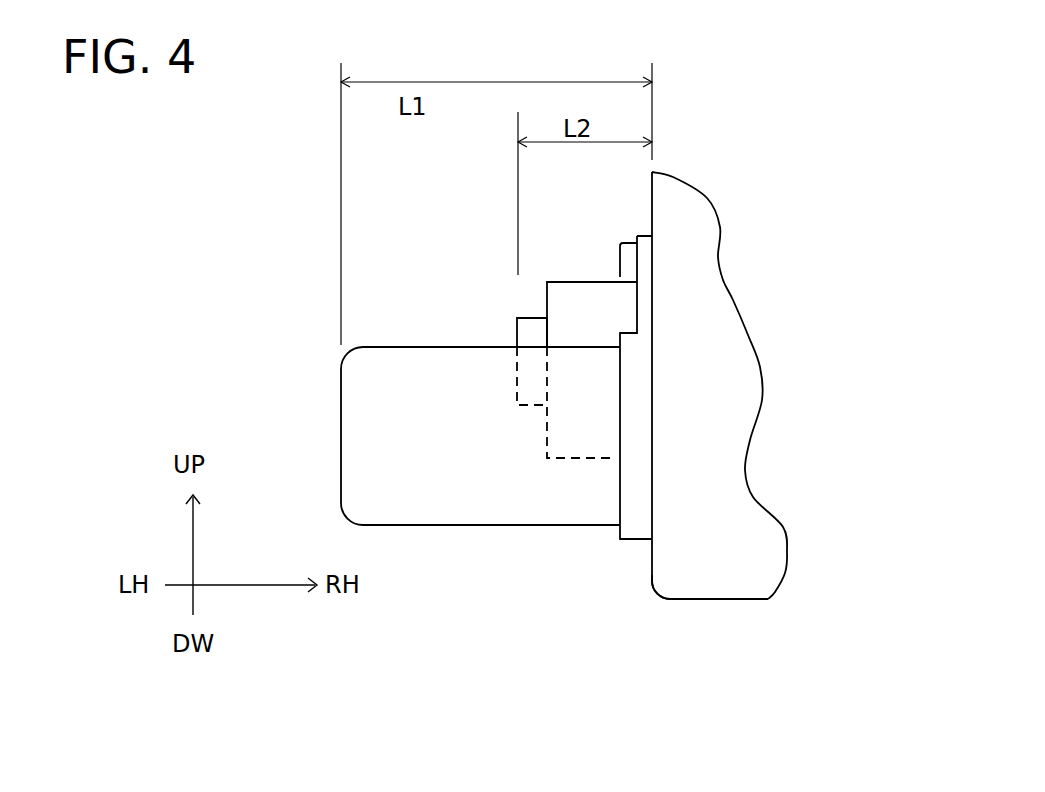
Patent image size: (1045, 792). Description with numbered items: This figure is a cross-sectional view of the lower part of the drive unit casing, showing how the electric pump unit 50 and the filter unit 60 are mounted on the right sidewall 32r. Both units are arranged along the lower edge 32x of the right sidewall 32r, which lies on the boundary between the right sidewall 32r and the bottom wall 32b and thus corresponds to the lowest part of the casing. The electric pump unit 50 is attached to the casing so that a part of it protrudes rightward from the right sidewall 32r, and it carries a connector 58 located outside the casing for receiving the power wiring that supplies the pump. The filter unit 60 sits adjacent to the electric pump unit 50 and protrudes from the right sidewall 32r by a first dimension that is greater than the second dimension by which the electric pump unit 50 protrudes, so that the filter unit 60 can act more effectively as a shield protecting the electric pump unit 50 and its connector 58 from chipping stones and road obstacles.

The filter unit 60 is at (363, 385).
The electric pump unit 50 is at (594, 310).
The connector 58 is at (525, 327).
The right sidewall 32r is at (705, 257).
The lower edge 32x is at (657, 597).
The bottom wall 32b is at (748, 600).